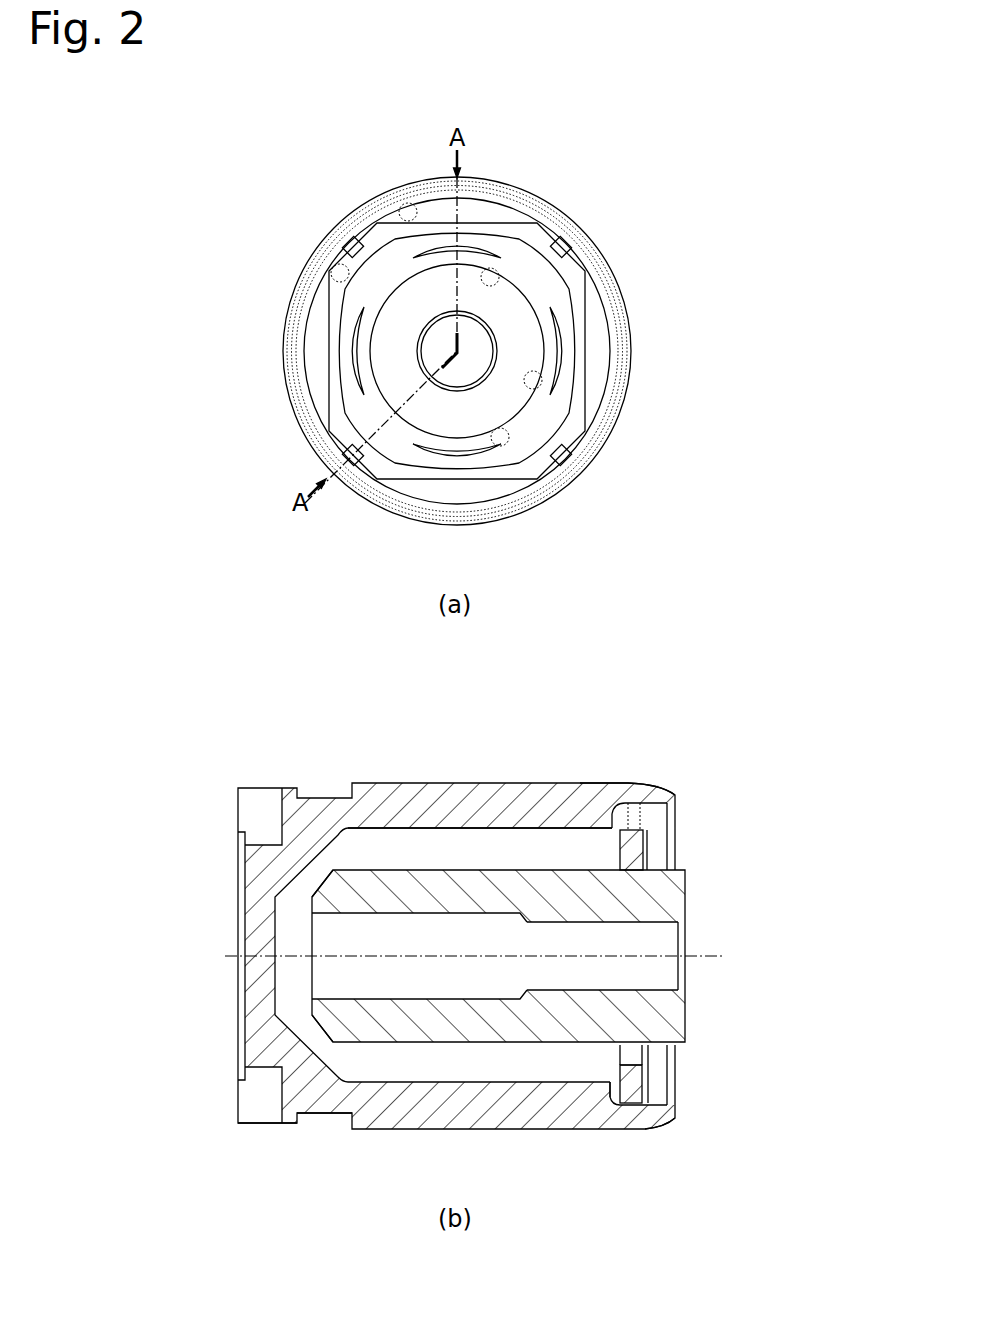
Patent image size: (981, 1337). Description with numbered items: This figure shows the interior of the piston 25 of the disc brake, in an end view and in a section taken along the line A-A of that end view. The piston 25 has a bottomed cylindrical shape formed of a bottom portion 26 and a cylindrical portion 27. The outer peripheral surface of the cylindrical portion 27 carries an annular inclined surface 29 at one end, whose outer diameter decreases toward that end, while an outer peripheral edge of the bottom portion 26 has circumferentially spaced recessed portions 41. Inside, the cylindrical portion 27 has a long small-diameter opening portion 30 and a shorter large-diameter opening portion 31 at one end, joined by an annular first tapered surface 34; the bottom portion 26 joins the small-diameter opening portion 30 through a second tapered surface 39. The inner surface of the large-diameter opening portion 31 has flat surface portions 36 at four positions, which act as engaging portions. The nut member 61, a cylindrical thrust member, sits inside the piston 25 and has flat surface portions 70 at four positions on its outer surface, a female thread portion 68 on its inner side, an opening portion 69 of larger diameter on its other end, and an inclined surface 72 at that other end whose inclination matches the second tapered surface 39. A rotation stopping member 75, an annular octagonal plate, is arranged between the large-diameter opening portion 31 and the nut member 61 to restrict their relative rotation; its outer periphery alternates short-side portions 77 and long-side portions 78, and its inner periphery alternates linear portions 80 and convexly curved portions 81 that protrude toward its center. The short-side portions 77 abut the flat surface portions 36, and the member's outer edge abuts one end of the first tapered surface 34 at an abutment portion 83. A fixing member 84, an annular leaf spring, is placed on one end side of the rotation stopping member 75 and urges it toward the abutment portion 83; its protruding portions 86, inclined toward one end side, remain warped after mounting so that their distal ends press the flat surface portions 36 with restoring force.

The piston 25 is at (548, 186).
The bottom portion 26 is at (242, 926).
The cylindrical portion 27 is at (487, 795).
The inclined surface 29 is at (658, 784).
The small-diameter opening portion 30 is at (417, 835).
The large-diameter opening portion 31 is at (398, 196).
The first tapered surface 34 is at (605, 1070).
The flat surface portions 36 is at (340, 276).
The second tapered surface 39 is at (330, 866).
The recessed portions 41 is at (258, 1125).
The nut member 61 is at (507, 399).
The female thread portion 68 is at (432, 330).
The opening portion 69 is at (375, 985).
The flat surface portions 70 is at (432, 250).
The inclined surface 72 is at (316, 1110).
The rotation stopping member 75 is at (448, 487).
The short-side portions 77 is at (360, 233).
The long-side portions 78 is at (492, 194).
The linear portions 80 is at (648, 1073).
The convexly curved portions 81 is at (516, 226).
The abutment portion 83 is at (600, 1130).
The fixing member 84 is at (598, 240).
The protruding portions 86 is at (345, 238).